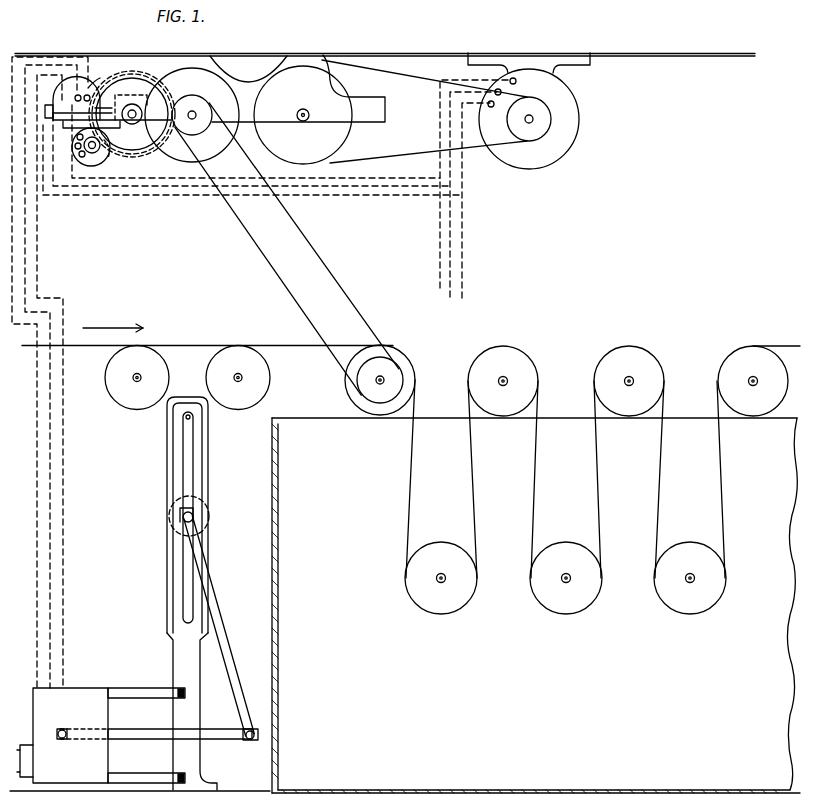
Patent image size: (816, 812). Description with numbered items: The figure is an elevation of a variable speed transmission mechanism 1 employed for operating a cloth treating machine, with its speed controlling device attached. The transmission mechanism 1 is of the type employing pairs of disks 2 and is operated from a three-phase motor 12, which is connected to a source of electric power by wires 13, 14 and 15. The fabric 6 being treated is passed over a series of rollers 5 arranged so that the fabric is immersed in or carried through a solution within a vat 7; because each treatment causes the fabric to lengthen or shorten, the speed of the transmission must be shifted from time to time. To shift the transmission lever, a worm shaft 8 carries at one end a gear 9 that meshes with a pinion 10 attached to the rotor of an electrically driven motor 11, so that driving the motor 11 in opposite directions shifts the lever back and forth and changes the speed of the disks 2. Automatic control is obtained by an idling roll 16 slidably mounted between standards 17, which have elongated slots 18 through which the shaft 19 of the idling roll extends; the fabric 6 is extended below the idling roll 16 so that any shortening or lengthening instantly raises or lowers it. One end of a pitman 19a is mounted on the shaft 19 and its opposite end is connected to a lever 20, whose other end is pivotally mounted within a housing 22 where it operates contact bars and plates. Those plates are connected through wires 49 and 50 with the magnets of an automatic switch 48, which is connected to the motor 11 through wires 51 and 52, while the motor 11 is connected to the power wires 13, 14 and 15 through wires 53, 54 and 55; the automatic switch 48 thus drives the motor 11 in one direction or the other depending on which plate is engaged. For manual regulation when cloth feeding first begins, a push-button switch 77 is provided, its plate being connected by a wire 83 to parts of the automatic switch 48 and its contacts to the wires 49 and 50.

The variable speed transmission mechanism 1 is at (283, 96).
The pairs of disks 2 is at (172, 152).
The rollers 5 is at (523, 352).
The fabric 6 is at (408, 486).
The vat 7 is at (278, 636).
The worm shaft 8 is at (110, 114).
The gear 9 is at (124, 152).
The pinion 10 is at (82, 158).
The electrically driven motor 11 is at (108, 155).
The three-phase motor 12 is at (563, 135).
The wire 13 is at (462, 239).
The wire 14 is at (450, 223).
The wire 15 is at (440, 260).
The idling roll 16 is at (215, 512).
The standards 17 is at (175, 568).
The elongated slots 18 is at (186, 607).
The shaft 19 is at (182, 518).
The pitman 19a is at (213, 600).
The lever 20 is at (157, 736).
The housing 22 is at (86, 702).
The automatic switch 48 is at (88, 88).
The wire 49 is at (50, 433).
The wire 50 is at (63, 470).
The wire 51 is at (106, 104).
The wire 52 is at (82, 103).
The wire 53 is at (380, 193).
The wire 54 is at (335, 185).
The wire 55 is at (390, 178).
The switch 77 is at (28, 750).
The wire 83 is at (37, 462).